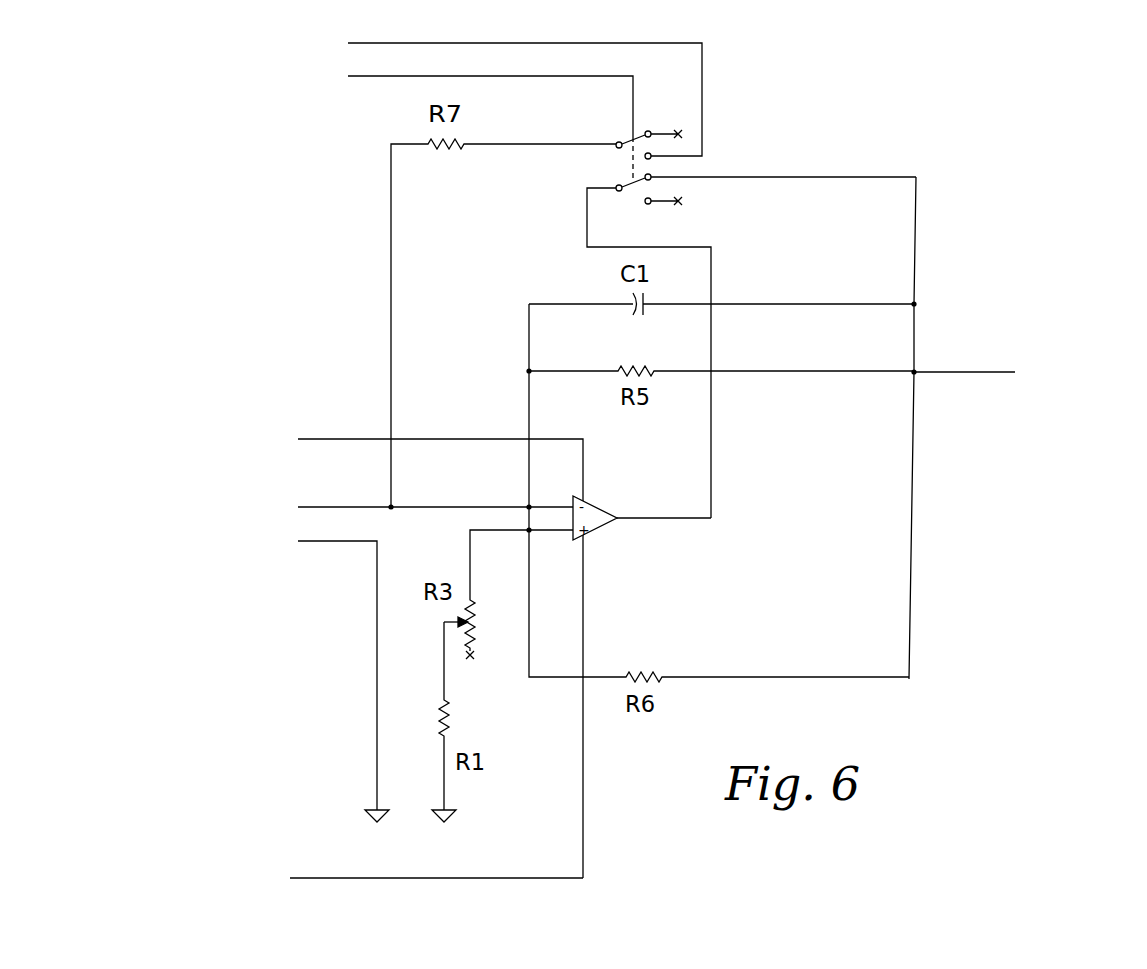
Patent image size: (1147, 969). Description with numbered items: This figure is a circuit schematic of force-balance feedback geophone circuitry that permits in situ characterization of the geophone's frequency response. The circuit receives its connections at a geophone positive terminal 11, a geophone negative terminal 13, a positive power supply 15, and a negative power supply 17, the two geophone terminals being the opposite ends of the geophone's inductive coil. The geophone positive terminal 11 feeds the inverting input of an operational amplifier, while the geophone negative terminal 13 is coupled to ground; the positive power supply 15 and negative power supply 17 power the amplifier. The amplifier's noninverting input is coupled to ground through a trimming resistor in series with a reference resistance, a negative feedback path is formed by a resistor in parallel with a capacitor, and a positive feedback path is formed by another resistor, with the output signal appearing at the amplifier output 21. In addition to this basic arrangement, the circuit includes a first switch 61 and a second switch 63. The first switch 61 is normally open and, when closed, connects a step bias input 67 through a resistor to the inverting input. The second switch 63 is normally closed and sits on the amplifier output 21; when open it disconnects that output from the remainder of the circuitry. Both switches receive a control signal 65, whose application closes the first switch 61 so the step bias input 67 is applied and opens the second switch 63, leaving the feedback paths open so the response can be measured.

The step bias input 67 is at (677, 44).
The control signal 65 is at (393, 76).
The first switch 61 is at (660, 133).
The second switch 63 is at (661, 201).
The amplifier output 21 is at (950, 373).
The positive power supply 15 is at (418, 439).
The negative power supply 17 is at (457, 878).
The geophone positive terminal 11 is at (328, 507).
The geophone negative terminal 13 is at (325, 541).